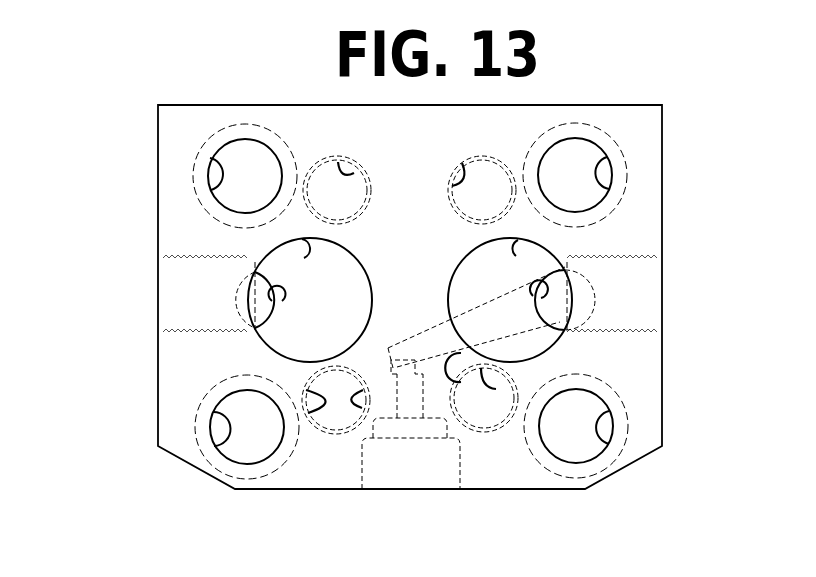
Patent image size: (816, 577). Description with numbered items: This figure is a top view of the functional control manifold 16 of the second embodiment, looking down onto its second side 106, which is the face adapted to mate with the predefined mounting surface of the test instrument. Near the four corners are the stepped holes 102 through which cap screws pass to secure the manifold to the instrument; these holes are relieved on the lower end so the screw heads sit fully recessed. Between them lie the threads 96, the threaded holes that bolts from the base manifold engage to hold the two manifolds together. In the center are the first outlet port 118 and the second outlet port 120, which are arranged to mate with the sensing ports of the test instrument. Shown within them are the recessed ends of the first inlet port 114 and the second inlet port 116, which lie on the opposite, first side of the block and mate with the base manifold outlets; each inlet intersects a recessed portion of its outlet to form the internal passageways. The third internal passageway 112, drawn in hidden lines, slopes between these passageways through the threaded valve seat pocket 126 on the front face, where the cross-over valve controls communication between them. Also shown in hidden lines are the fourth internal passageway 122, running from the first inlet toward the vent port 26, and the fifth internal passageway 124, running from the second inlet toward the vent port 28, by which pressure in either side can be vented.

The functional control manifold 16 is at (576, 76).
The stepped holes 102 is at (212, 159).
The threads 96 is at (462, 172).
The vent port 26 is at (215, 262).
The vent port 28 is at (607, 330).
The second side 106 is at (431, 249).
The first outlet port 118 is at (305, 256).
The second outlet port 120 is at (518, 254).
The first inlet port 114 is at (283, 302).
The second inlet port 116 is at (533, 297).
The third internal passageway 112 is at (389, 331).
The threaded valve seat pocket 126 is at (458, 462).
The fourth internal passageway 122 is at (362, 407).
The fifth internal passageway 124 is at (444, 364).